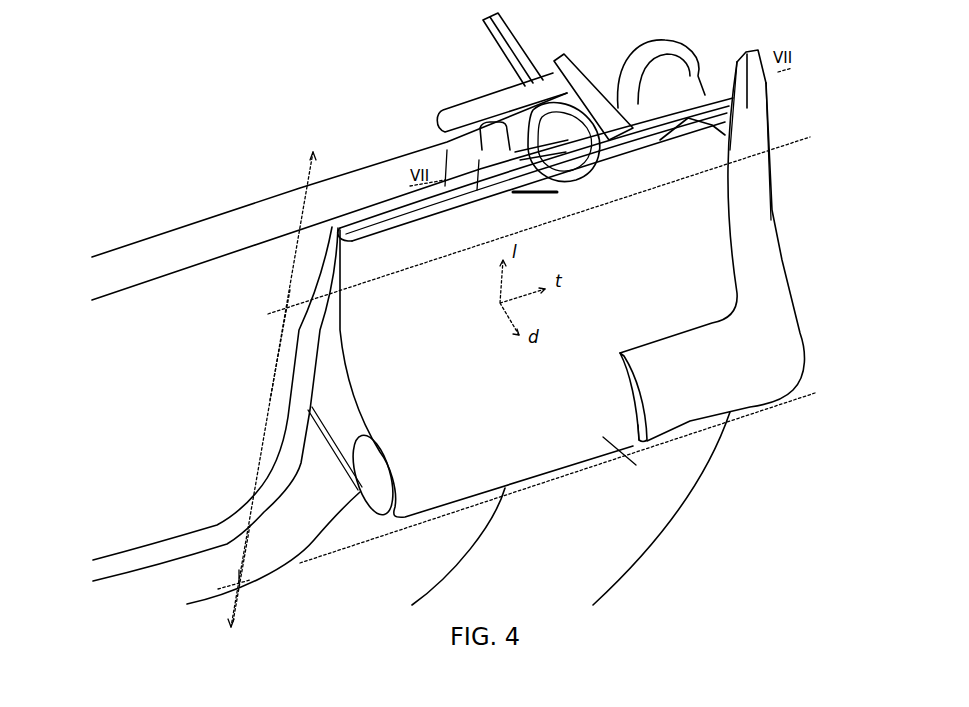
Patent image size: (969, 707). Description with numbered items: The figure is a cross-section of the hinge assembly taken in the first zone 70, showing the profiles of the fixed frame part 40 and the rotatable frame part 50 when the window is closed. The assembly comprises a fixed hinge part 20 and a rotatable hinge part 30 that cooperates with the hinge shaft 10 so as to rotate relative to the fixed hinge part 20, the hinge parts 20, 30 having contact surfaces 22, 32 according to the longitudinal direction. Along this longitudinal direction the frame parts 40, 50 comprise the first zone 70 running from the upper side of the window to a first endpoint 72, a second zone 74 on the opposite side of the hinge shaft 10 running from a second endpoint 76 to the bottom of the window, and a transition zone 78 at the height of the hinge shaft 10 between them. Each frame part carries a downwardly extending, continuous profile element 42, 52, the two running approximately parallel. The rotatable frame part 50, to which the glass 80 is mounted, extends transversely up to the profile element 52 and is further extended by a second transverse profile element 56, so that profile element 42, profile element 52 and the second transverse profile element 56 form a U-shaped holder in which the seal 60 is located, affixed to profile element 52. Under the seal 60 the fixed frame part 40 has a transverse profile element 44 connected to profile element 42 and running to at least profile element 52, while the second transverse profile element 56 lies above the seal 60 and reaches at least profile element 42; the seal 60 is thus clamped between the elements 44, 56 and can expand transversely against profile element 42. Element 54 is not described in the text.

The hinge shaft 10 is at (372, 477).
The fixed hinge part 20 is at (788, 337).
The contact surface 22 is at (642, 396).
The rotatable hinge part 30 is at (600, 450).
The contact surface 32 is at (634, 408).
The fixed frame part 40 is at (757, 130).
The profile element 42 is at (613, 102).
The transverse profile element 44 is at (538, 74).
The rotatable frame part 50 is at (410, 235).
The profile element 52 is at (470, 130).
The second tab 54 is at (513, 127).
The second transverse profile element 56 is at (667, 88).
The seal 60 is at (582, 100).
The first zone 70 is at (310, 177).
The first endpoint 72 is at (787, 147).
The second zone 74 is at (237, 597).
The second endpoint 76 is at (783, 405).
The transition zone 78 is at (274, 380).
The glass 80 is at (217, 228).